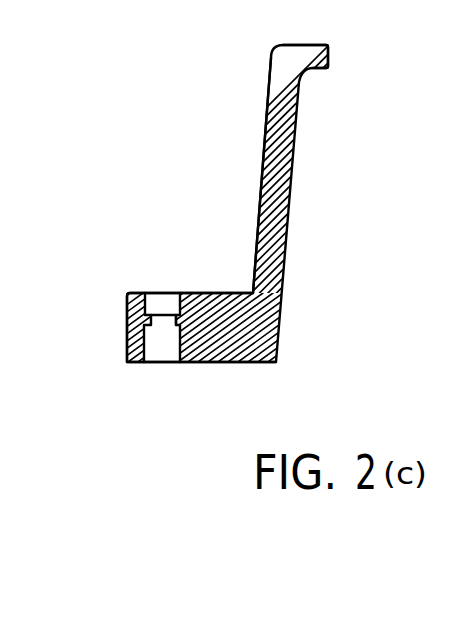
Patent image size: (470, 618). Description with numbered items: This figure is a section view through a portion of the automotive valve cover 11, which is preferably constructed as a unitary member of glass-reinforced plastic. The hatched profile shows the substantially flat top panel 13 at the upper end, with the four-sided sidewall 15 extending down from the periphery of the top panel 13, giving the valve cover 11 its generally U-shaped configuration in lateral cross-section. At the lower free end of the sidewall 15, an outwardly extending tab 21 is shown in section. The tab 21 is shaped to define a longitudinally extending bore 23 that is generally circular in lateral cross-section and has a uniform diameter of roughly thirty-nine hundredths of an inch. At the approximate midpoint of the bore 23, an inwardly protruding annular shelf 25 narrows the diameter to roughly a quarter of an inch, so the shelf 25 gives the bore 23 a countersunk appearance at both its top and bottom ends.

The valve cover 11 is at (193, 163).
The top panel 13 is at (310, 43).
The sidewall 15 is at (268, 92).
The tab 21 is at (128, 325).
The bore 23 is at (158, 302).
The annular shelf 25 is at (168, 318).